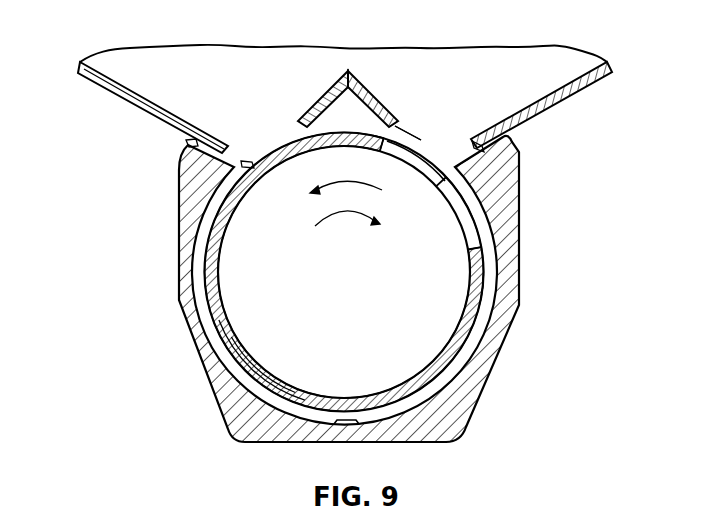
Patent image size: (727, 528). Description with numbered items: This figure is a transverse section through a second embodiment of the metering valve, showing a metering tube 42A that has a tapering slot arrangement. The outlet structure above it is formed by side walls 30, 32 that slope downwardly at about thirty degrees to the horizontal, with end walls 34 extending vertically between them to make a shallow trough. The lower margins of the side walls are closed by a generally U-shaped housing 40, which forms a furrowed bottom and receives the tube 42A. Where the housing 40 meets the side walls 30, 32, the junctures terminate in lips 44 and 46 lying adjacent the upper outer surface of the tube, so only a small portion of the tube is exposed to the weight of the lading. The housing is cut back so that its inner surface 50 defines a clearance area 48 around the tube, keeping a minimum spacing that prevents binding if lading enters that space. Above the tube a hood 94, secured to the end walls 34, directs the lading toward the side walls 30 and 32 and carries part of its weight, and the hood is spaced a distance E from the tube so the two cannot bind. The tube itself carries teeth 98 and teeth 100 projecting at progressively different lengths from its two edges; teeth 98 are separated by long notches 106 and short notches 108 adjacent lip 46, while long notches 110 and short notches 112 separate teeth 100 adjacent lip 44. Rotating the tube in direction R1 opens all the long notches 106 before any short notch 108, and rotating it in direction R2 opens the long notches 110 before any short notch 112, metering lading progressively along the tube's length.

The side wall 30 is at (132, 90).
The side wall 32 is at (575, 82).
The end wall 34 is at (327, 54).
The U-shaped housing 40 is at (524, 236).
The metering tube 42A is at (223, 270).
The lip 44 is at (244, 160).
The lip 46 is at (449, 164).
The area 48 is at (201, 313).
The inner surface of housing 50 is at (216, 356).
The hood 94 is at (371, 104).
The teeth 98 is at (442, 189).
The teeth 100 is at (466, 218).
The long notch 106 is at (387, 151).
The short notch 108 is at (427, 167).
The long notch 110 is at (470, 295).
The short notch 112 is at (478, 249).
The spacing distance E is at (434, 122).
The direction of rotation R1 is at (358, 192).
The direction of rotation R2 is at (361, 224).